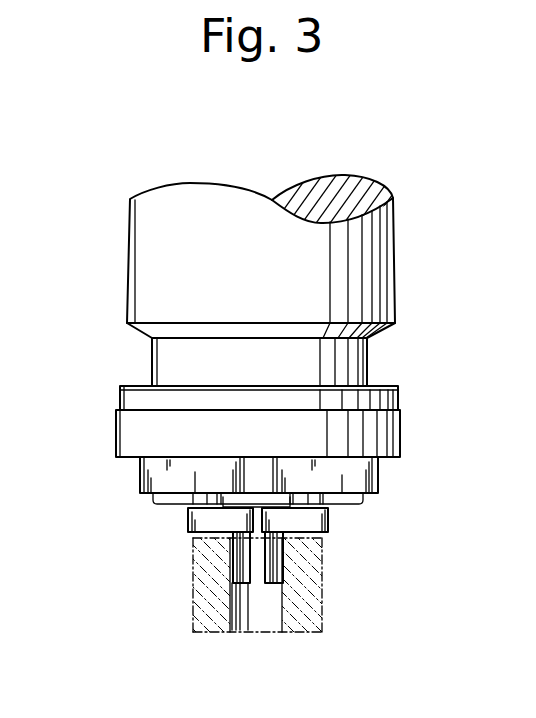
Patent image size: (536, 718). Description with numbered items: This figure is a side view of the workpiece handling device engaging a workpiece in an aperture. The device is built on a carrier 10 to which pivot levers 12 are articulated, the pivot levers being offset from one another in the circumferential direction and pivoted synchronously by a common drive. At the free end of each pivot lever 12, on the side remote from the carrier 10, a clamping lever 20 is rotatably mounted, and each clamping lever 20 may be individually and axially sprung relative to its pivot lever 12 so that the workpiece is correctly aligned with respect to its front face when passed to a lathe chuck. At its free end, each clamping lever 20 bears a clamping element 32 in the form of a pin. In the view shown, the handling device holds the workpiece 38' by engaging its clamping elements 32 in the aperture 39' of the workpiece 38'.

The carrier 10 is at (130, 433).
The pivot lever 12 is at (133, 473).
The clamping lever 20 is at (188, 527).
The clamping element 32 is at (238, 585).
The workpiece 38' is at (254, 585).
The aperture 39' is at (343, 596).